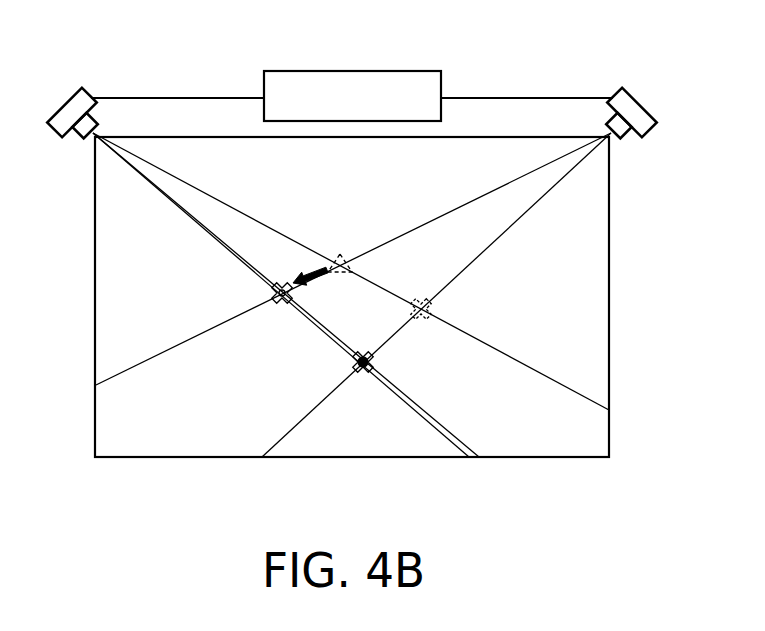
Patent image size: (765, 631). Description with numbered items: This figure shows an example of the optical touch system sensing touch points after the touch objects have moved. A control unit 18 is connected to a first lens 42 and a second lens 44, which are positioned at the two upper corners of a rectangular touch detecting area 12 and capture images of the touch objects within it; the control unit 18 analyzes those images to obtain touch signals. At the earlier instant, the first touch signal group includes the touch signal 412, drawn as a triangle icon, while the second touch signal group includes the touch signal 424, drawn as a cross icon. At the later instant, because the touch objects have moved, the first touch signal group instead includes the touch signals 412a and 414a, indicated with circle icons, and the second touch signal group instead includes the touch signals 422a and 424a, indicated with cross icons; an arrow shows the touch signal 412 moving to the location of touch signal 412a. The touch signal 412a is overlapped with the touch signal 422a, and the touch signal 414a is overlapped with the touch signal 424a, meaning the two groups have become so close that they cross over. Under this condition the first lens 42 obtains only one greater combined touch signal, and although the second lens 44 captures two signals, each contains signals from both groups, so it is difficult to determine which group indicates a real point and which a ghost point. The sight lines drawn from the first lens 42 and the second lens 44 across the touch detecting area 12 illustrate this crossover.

The touch detecting area 12 is at (610, 326).
The control unit 18 is at (353, 70).
The first lens 42 is at (65, 98).
The second lens 44 is at (637, 98).
The touch signal 412 is at (340, 252).
The touch signal 412a is at (292, 293).
The touch signal 422a is at (271, 292).
The touch signal 424 is at (434, 308).
The touch signal 424a is at (376, 362).
The touch signal 414a is at (366, 373).